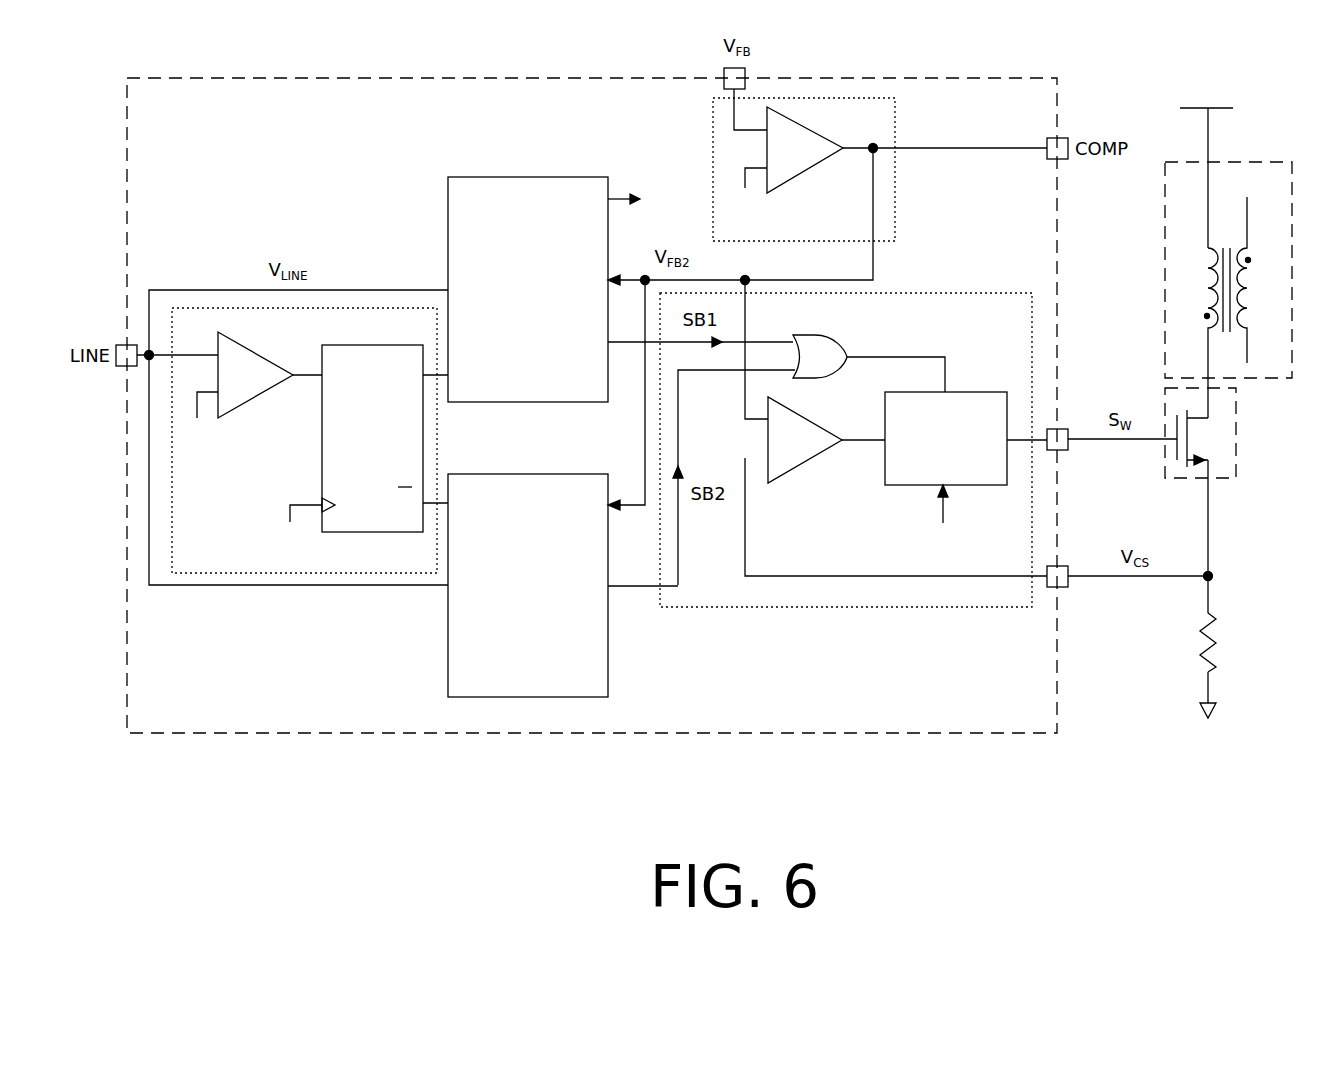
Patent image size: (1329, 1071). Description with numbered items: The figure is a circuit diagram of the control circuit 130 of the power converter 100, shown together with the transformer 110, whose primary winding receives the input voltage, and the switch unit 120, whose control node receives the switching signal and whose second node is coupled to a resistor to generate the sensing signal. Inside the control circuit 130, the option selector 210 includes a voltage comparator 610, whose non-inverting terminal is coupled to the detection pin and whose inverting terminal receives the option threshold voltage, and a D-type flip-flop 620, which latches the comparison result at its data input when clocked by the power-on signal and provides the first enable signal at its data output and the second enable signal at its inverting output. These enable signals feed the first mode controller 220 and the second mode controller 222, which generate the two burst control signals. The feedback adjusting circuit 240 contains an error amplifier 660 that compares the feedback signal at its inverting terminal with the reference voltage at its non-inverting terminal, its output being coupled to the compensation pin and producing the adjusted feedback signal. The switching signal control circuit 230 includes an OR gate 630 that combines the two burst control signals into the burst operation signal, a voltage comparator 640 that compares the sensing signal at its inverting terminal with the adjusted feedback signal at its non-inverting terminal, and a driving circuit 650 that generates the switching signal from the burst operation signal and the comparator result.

The power converter 100 is at (1244, 425).
The transformer 110 is at (1262, 160).
The switch unit 120 is at (1236, 437).
The control circuit 130 is at (757, 734).
The option selector 210 is at (438, 432).
The first mode controller 220 is at (548, 177).
The second mode controller 222 is at (546, 474).
The switching signal control circuit 230 is at (984, 292).
The feedback adjusting circuit 240 is at (713, 134).
The voltage comparator 610 is at (258, 397).
The D-type flip-flop 620 is at (320, 474).
The OR gate 630 is at (838, 350).
The voltage comparator 640 is at (803, 460).
The driving circuit 650 is at (905, 487).
The error amplifier 660 is at (806, 170).